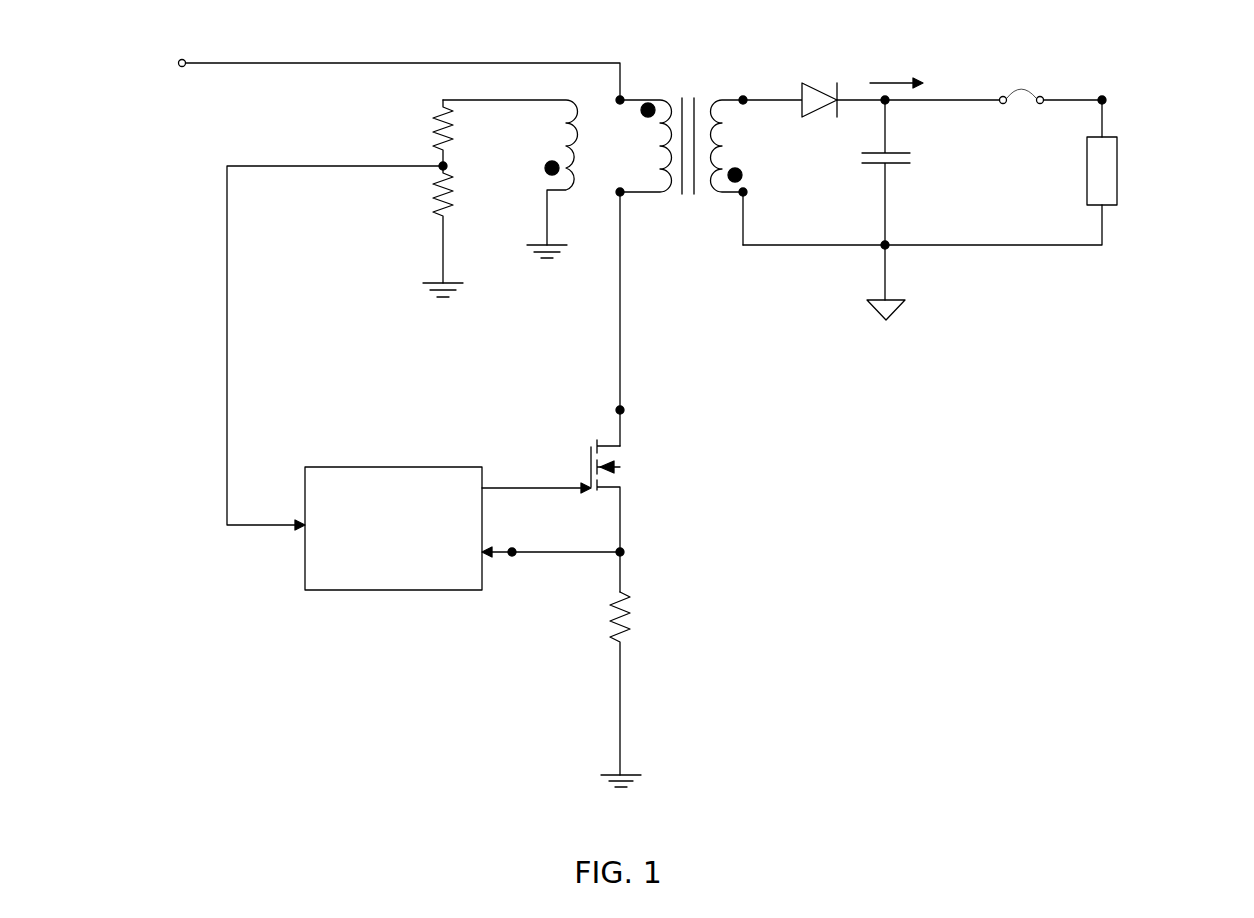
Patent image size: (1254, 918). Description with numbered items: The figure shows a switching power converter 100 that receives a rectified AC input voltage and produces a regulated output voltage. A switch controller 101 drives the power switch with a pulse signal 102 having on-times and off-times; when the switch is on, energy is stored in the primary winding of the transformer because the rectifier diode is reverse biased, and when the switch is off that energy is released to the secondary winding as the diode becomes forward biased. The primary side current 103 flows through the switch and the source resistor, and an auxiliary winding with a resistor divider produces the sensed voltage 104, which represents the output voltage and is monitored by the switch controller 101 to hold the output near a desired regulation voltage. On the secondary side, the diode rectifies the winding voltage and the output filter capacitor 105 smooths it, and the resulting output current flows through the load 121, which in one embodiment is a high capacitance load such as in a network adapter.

The power converter 100 is at (692, 404).
The switch controller 101 is at (395, 467).
The pulse signal 102 is at (567, 487).
The primary current 103 is at (640, 315).
The feedback voltage sense signal 104 is at (335, 348).
The output filter capacitor 105 is at (903, 180).
The load 121 is at (1146, 167).